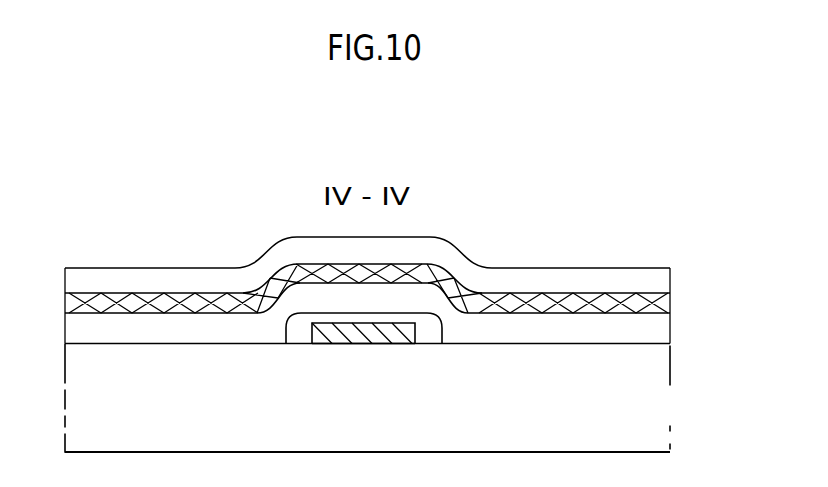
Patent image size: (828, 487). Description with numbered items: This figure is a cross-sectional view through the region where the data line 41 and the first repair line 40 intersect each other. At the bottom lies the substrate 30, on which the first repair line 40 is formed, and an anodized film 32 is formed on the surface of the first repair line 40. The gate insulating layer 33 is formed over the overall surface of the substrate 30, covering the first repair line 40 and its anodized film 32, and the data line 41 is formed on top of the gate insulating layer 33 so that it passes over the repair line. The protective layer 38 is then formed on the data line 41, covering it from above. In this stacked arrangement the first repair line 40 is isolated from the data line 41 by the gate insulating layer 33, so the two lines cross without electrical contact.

The substrate 30 is at (650, 390).
The anodized film 32 is at (430, 336).
The gate insulating layer 33 is at (652, 333).
The protective layer 38 is at (652, 281).
The first repair line 40 is at (350, 340).
The data line 41 is at (662, 305).